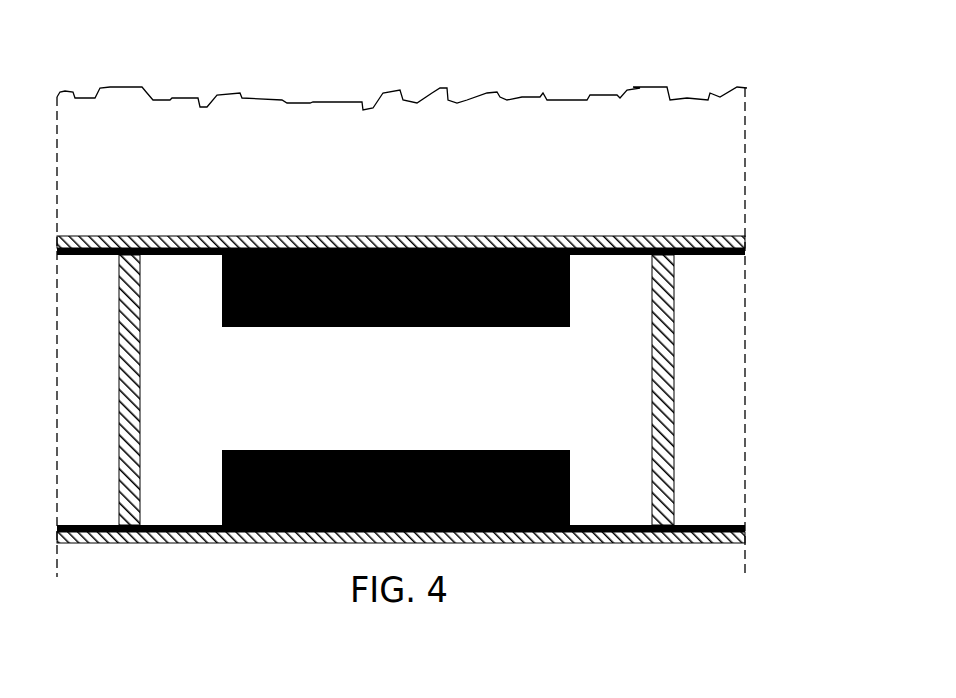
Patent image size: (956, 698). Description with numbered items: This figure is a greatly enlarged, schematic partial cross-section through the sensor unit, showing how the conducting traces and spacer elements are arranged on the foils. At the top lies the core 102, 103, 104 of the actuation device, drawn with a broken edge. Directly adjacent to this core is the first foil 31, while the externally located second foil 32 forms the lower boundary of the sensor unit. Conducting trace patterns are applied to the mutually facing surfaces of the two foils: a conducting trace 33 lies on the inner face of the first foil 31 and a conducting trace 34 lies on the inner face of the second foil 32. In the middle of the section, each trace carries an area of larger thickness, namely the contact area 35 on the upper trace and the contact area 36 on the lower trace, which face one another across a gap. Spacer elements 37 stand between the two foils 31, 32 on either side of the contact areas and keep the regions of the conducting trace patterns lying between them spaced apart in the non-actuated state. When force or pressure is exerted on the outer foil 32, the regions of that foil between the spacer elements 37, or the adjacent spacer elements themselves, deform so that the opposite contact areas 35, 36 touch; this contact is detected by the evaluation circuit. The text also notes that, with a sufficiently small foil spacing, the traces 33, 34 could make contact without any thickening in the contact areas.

The core 102 is at (402, 293).
The core 103 is at (402, 293).
The core 104 is at (497, 62).
The first foil 31 is at (742, 240).
The second foil 32 is at (745, 540).
The conducting trace 33 is at (730, 255).
The conducting trace 34 is at (745, 527).
The contact area 35 is at (223, 280).
The contact area 36 is at (222, 502).
The spacer element 37 is at (119, 463).